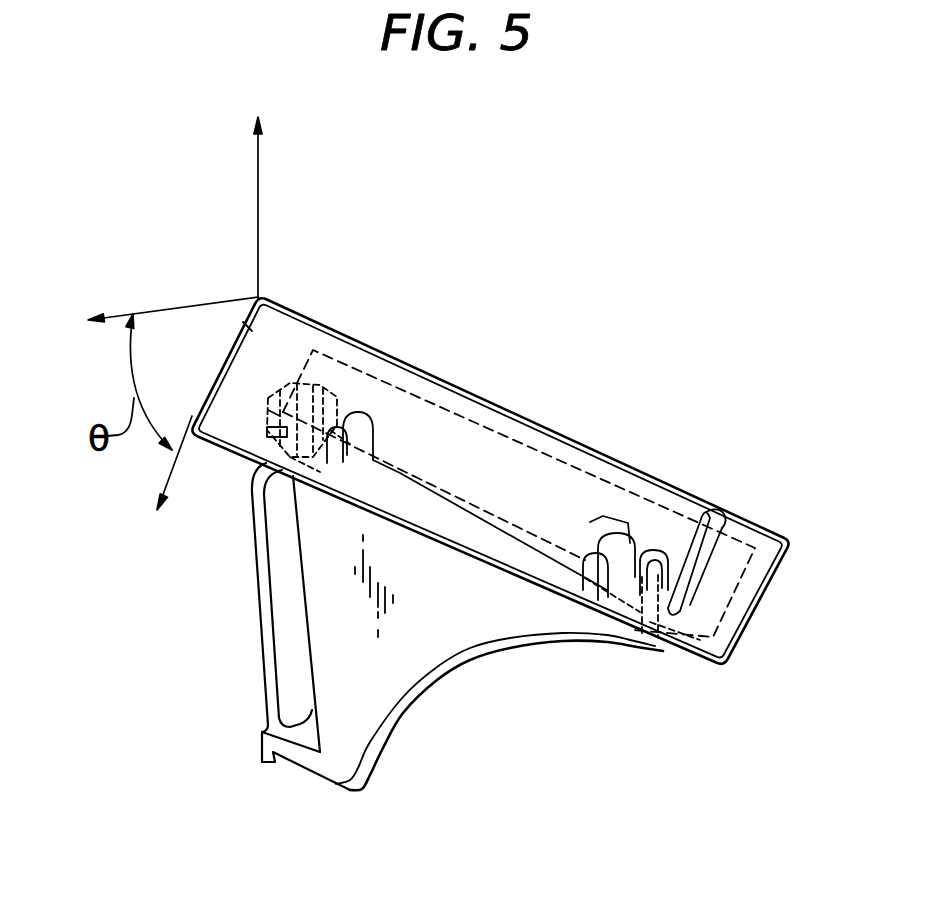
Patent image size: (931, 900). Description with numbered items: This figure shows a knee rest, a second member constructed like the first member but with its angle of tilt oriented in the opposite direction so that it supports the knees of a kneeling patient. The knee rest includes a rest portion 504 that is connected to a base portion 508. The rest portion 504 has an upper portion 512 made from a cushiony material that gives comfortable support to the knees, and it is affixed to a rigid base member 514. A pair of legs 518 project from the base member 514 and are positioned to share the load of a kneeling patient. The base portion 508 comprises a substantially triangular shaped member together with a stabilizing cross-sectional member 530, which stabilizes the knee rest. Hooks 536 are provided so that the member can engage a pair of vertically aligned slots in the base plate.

The rest portion 504 is at (768, 622).
The base portion 508 is at (372, 634).
The upper portion 512 is at (266, 345).
The rigid base member 514 is at (462, 398).
The legs 518 is at (313, 350).
The stabilizing cross-sectional member 530 is at (290, 658).
The hooks 536 is at (268, 408).